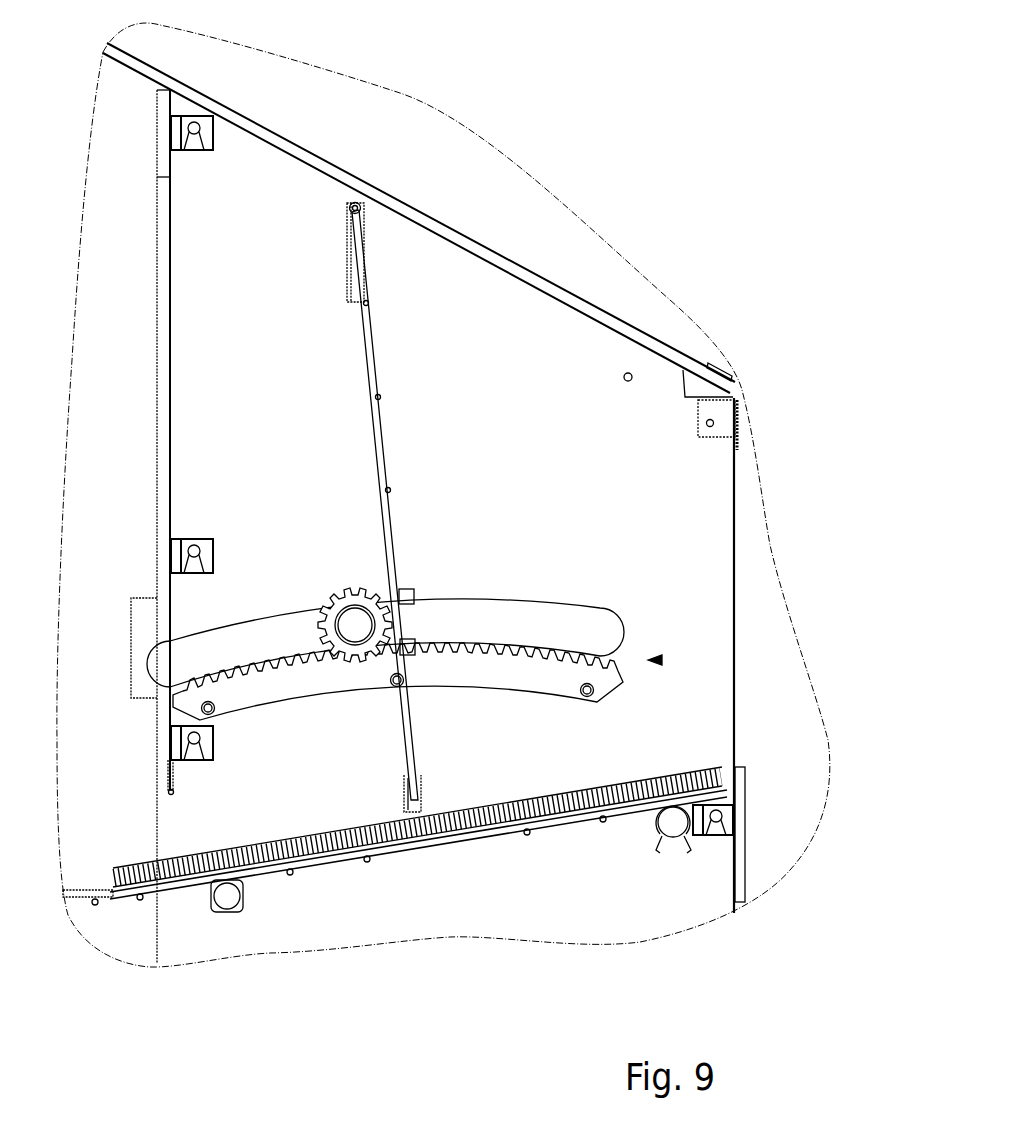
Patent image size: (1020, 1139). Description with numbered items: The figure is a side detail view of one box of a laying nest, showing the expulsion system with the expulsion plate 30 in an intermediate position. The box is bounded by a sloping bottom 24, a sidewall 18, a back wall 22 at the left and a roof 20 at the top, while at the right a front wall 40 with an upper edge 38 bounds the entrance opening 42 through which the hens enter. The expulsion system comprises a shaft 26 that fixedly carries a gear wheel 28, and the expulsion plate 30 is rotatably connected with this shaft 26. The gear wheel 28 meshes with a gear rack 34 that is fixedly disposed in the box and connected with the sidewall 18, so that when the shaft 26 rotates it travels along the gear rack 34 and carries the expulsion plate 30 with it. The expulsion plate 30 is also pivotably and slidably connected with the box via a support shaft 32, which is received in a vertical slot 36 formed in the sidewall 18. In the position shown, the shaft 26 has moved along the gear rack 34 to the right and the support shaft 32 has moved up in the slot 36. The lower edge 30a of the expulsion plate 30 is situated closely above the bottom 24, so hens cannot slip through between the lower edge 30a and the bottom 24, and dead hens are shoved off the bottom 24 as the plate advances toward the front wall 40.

The sidewall 18 is at (588, 516).
The roof 20 is at (307, 150).
The back wall 22 is at (170, 278).
The bottom 24 is at (340, 830).
The shaft 26 is at (362, 628).
The gear wheel 28 is at (348, 596).
The expulsion plate 30 is at (382, 440).
The lower edge 30a is at (424, 812).
The support shaft 32 is at (368, 200).
The gear rack 34 is at (548, 684).
The slot 36 is at (364, 258).
The upper edge 38 is at (738, 763).
The front wall 40 is at (741, 812).
The entrance opening 42 is at (660, 660).